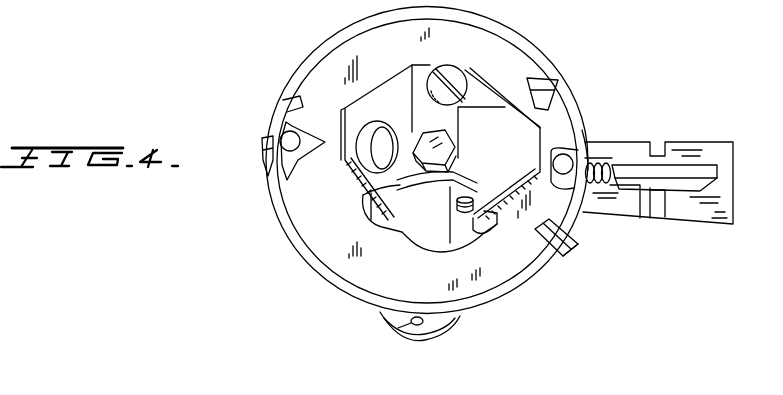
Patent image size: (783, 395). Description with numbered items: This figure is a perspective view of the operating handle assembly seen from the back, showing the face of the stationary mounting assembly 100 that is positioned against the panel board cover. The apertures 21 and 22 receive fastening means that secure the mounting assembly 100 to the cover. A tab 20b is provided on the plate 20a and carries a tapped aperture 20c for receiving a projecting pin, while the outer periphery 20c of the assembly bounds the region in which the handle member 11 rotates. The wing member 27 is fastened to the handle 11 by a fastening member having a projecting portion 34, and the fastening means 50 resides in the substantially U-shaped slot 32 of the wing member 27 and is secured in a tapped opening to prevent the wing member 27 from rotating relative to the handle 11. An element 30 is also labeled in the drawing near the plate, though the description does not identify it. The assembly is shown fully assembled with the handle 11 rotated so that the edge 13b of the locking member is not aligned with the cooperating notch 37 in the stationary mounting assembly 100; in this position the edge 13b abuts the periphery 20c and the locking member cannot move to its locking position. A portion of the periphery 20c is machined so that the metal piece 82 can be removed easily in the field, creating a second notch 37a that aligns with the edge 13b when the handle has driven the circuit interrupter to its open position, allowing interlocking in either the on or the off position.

The stationary mounting assembly 100 is at (597, 27).
The handle member 11 is at (705, 139).
The edge of member 13 13b is at (620, 166).
The plate 20a is at (345, 225).
The tab 20b is at (458, 321).
The periphery of stationary mounting assembly 20c is at (593, 153).
The aperture 21 is at (553, 163).
The aperture 22 is at (281, 135).
The wing member 27 is at (490, 89).
The tubular boss 30 is at (357, 162).
The U-shaped slot 32 is at (409, 67).
The projecting portion 34 is at (453, 141).
The notch 37 is at (557, 93).
The second notch 37a is at (564, 259).
The fastening means 50 is at (454, 65).
The metal piece 82 is at (568, 247).